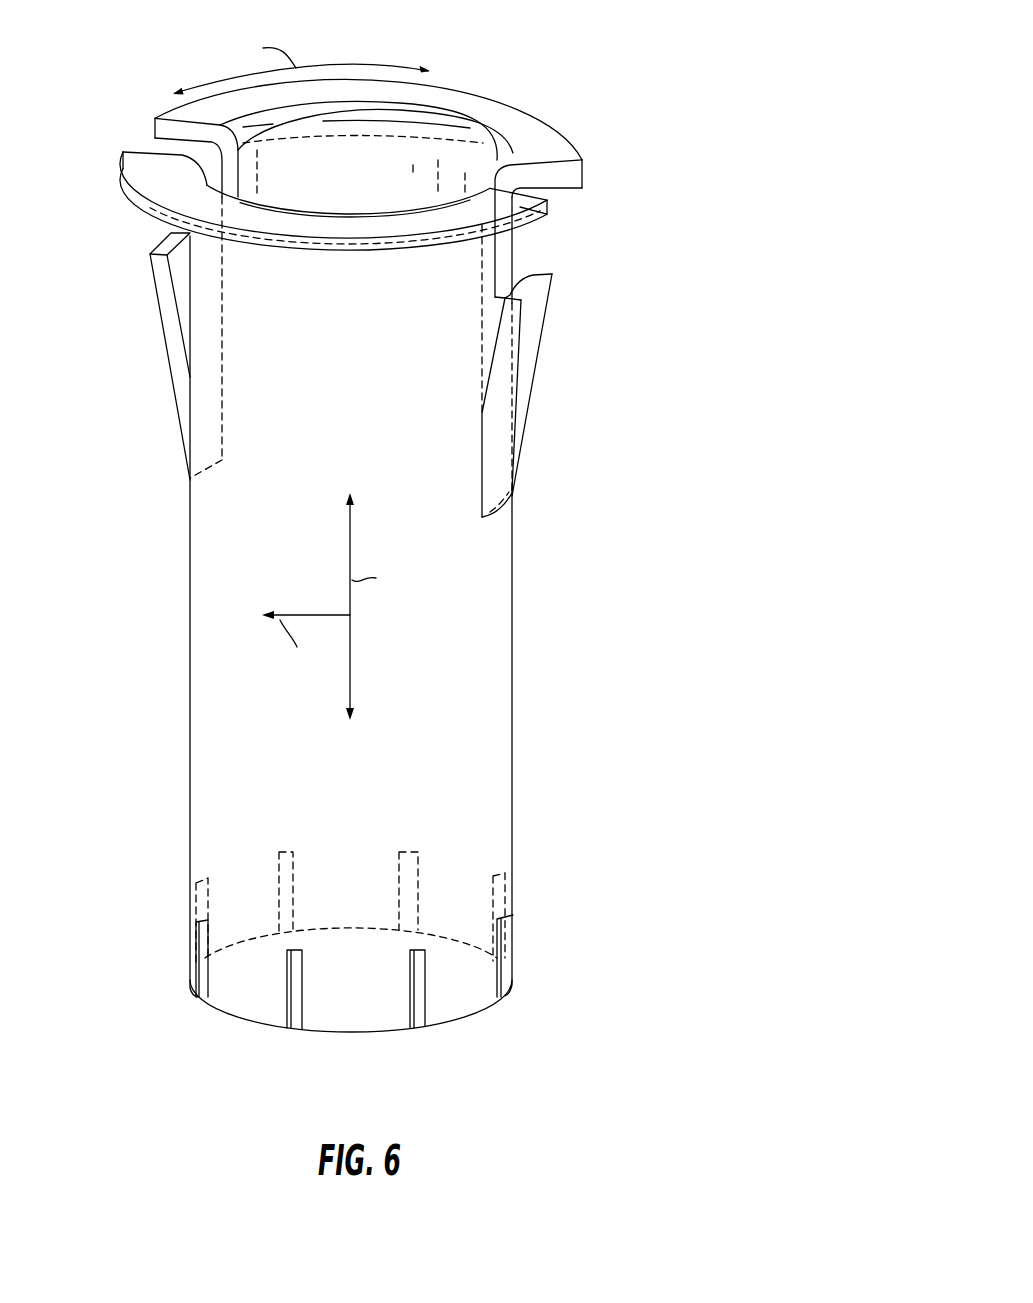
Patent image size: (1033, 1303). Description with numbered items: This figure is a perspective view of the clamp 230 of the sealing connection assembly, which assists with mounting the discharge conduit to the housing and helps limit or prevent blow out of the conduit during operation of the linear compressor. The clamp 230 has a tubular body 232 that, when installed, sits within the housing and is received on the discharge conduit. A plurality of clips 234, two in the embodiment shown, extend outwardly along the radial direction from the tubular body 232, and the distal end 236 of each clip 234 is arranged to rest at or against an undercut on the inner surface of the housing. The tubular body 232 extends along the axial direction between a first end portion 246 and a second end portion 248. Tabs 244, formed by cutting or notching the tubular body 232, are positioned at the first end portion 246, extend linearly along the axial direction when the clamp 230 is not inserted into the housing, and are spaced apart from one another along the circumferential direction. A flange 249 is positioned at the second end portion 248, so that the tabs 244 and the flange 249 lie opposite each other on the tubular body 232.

The clamp 230 is at (608, 74).
The tubular body 232 is at (512, 768).
The clips 234 is at (172, 342).
The distal end 236 is at (142, 254).
The tabs 244 is at (255, 1003).
The first end portion 246 is at (525, 940).
The second end portion 248 is at (520, 246).
The flange 249 is at (560, 152).